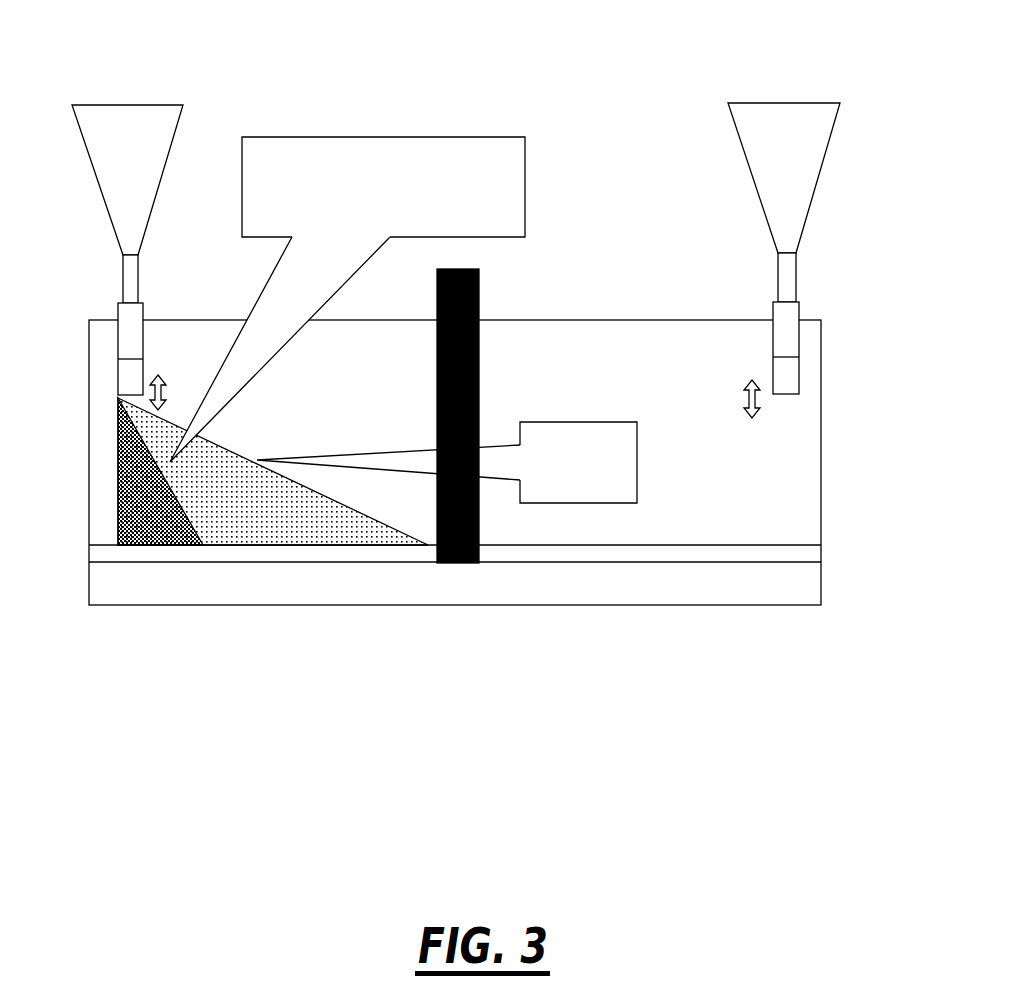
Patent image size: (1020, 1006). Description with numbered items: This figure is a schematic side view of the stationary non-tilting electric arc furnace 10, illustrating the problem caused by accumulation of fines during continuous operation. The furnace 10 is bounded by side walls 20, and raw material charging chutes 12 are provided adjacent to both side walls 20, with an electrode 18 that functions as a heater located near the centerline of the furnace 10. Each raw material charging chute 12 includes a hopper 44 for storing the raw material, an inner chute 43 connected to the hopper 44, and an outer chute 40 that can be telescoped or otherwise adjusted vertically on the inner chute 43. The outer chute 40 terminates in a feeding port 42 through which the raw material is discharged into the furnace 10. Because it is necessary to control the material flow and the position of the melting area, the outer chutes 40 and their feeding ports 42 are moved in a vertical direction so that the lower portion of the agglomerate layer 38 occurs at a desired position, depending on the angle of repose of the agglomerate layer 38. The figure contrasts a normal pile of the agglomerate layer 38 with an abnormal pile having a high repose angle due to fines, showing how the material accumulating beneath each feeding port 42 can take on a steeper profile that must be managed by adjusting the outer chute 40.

The furnace 10 is at (590, 211).
The raw material charging chute 12 is at (484, 243).
The electrode 18 is at (479, 300).
The side wall 20 is at (86, 525).
The agglomerate layer 38 is at (249, 451).
The outer chute 40 is at (142, 372).
The feeding port 42 is at (110, 415).
The inner chute 43 is at (138, 285).
The hopper 44 is at (145, 105).